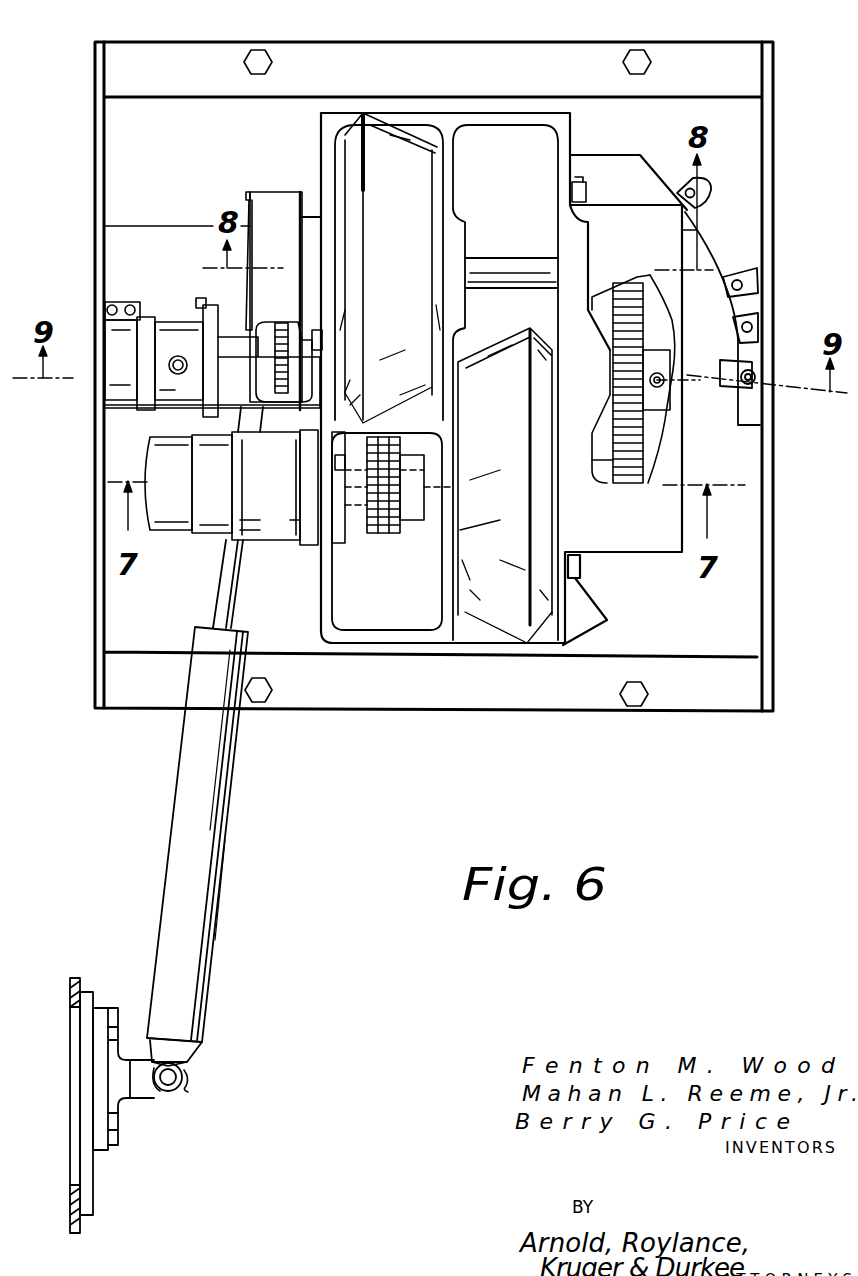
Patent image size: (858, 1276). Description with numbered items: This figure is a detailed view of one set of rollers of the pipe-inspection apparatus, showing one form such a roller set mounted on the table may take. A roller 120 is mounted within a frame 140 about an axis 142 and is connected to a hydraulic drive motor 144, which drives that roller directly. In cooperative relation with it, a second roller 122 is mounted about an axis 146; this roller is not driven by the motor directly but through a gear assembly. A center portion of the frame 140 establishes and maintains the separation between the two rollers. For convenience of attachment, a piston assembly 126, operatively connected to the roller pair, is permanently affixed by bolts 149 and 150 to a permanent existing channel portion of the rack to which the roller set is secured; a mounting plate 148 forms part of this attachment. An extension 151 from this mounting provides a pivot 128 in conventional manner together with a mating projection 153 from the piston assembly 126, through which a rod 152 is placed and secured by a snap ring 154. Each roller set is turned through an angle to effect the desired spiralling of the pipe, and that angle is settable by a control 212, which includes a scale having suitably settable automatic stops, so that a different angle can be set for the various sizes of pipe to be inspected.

The roller 120 is at (482, 630).
The roller 122 is at (398, 155).
The piston assembly 126 is at (243, 818).
The pivot 128 is at (199, 1080).
The frame 140 is at (470, 113).
The axis 142 is at (452, 487).
The hydraulic drive motor 144 is at (280, 522).
The axis 146 is at (505, 268).
The mounting plate 148 is at (75, 977).
The bolt 149 is at (124, 1006).
The bolt 150 is at (120, 1148).
The extension 151 is at (176, 1100).
The rod 152 is at (188, 1063).
The mating projection 153 is at (183, 1058).
The snap ring 154 is at (186, 1078).
The control 212 is at (778, 410).